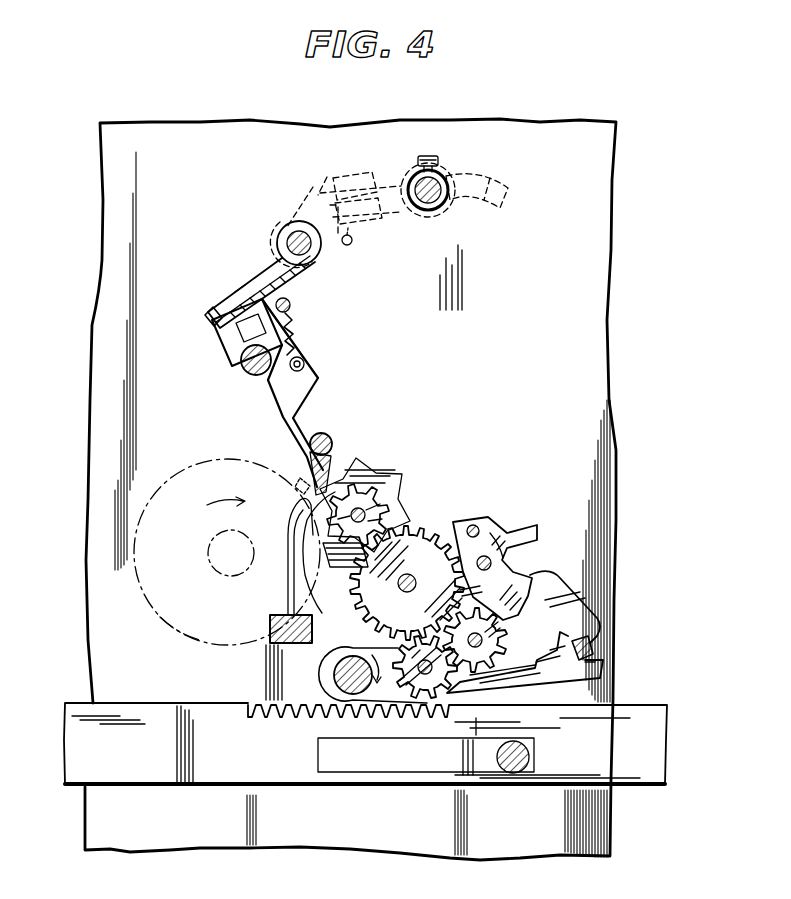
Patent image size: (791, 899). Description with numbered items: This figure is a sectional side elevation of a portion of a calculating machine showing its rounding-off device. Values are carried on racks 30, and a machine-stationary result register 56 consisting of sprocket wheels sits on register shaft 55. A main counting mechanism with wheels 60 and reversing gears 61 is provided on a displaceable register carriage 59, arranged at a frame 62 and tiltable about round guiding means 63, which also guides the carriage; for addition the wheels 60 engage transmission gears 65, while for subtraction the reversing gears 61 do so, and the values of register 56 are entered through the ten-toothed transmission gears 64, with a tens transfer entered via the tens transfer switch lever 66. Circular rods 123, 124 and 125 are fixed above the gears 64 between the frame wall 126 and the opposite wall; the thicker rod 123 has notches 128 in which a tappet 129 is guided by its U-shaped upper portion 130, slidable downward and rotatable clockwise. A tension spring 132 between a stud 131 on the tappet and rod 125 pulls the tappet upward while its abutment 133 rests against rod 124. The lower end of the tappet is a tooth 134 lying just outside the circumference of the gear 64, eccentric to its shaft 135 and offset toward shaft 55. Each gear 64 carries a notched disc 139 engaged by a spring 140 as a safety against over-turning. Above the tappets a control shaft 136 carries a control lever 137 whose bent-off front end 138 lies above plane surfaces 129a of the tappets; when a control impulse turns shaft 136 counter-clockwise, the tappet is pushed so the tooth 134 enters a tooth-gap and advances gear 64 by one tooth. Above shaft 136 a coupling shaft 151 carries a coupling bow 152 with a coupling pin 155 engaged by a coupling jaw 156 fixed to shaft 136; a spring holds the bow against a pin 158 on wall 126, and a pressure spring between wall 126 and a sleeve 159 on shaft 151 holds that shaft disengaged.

The racks 30 is at (68, 735).
The register shaft 55 is at (218, 531).
The stationary result register 56 is at (188, 613).
The register carriage 59 is at (597, 668).
The wheels of main counting mechanism 60 is at (390, 647).
The reversing gears 61 is at (505, 640).
The frame 62 is at (553, 590).
The round guiding means 63 is at (334, 672).
The transmission gears 64 is at (395, 490).
The transmission gears 65 is at (353, 592).
The tens transfer switch lever 66 is at (505, 540).
The circular rod 123 is at (266, 384).
The circular rod 124 is at (318, 432).
The circular rod 125 is at (290, 302).
The frame wall 126 is at (598, 150).
The notches 128 is at (242, 362).
The tappet 129 is at (298, 382).
The plane surfaces 129a is at (213, 318).
The U-shaped upper portion 130 is at (213, 341).
The stud 131 is at (305, 362).
The tension springs 132 is at (297, 332).
The abutment 133 is at (332, 455).
The tooth 134 is at (340, 465).
The shaft 135 is at (410, 526).
The control shaft 136 is at (293, 231).
The control lever 137 is at (265, 262).
The bent-off front end 138 is at (212, 300).
The notched disc 139 is at (380, 472).
The spring 140 is at (288, 585).
The coupling shaft 151 is at (444, 205).
The coupling bow 152 is at (417, 157).
The coupling pin 155 is at (385, 220).
The coupling jaw 156 is at (338, 190).
The pin 158 is at (352, 243).
The sleeve 159 is at (437, 170).